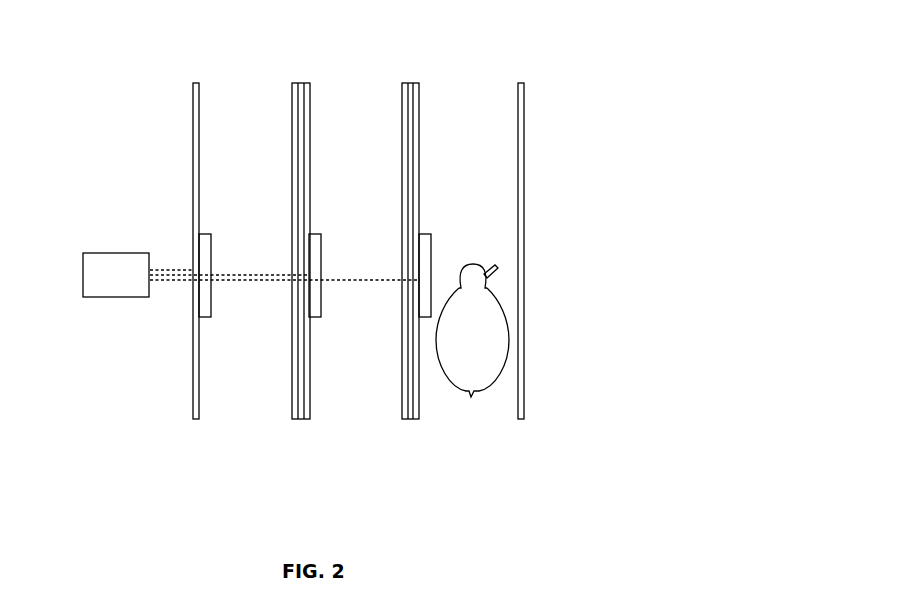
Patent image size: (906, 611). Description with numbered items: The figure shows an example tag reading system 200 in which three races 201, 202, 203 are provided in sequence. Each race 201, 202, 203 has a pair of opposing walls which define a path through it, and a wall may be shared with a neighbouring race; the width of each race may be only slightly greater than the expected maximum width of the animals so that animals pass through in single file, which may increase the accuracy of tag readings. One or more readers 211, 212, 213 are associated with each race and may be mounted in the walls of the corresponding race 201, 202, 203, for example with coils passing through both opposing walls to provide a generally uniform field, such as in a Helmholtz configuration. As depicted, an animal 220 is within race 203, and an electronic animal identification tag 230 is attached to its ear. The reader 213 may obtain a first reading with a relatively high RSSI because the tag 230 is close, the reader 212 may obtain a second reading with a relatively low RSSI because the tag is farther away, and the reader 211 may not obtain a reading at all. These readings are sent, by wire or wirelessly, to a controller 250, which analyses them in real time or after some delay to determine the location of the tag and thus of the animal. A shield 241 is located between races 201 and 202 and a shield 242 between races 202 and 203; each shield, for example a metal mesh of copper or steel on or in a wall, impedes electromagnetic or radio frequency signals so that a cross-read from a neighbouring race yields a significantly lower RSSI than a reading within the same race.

The tag reading system 200 is at (122, 117).
The race 201 is at (248, 440).
The race 202 is at (359, 440).
The race 203 is at (469, 440).
The reader 211 is at (203, 233).
The reader 212 is at (313, 233).
The reader 213 is at (425, 233).
The animal 220 is at (502, 308).
The electronic animal identification tag 230 is at (498, 271).
The shield 241 is at (301, 82).
The shield 242 is at (410, 82).
The controller 250 is at (83, 271).